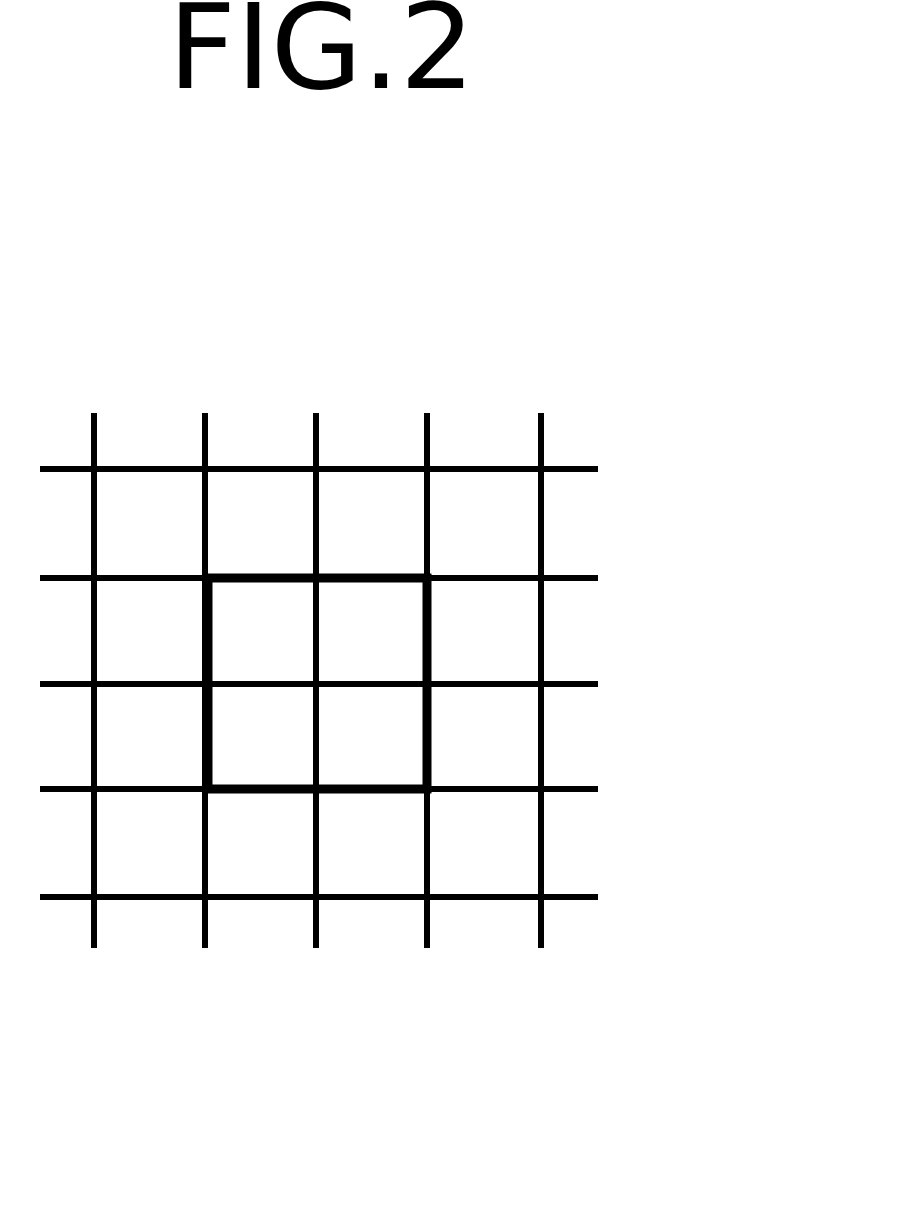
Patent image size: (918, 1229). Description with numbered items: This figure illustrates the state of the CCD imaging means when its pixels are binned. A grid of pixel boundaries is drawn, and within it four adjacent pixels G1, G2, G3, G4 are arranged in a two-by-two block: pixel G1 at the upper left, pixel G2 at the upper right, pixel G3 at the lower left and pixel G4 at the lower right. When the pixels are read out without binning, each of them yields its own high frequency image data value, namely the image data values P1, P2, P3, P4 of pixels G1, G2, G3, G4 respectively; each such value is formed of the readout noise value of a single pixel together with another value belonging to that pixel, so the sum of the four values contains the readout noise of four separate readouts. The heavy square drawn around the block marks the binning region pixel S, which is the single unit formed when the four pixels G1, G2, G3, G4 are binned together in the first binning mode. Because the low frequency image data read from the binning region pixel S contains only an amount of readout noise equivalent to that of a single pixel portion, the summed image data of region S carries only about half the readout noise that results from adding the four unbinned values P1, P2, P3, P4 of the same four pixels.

The binning region pixel S is at (381, 575).
The pixel G1 is at (261, 605).
The pixel G2 is at (390, 640).
The pixel G3 is at (262, 765).
The pixel G4 is at (372, 765).
The image data value P1 is at (260, 459).
The image data value P2 is at (564, 631).
The image data value P3 is at (255, 901).
The image data value P4 is at (379, 901).